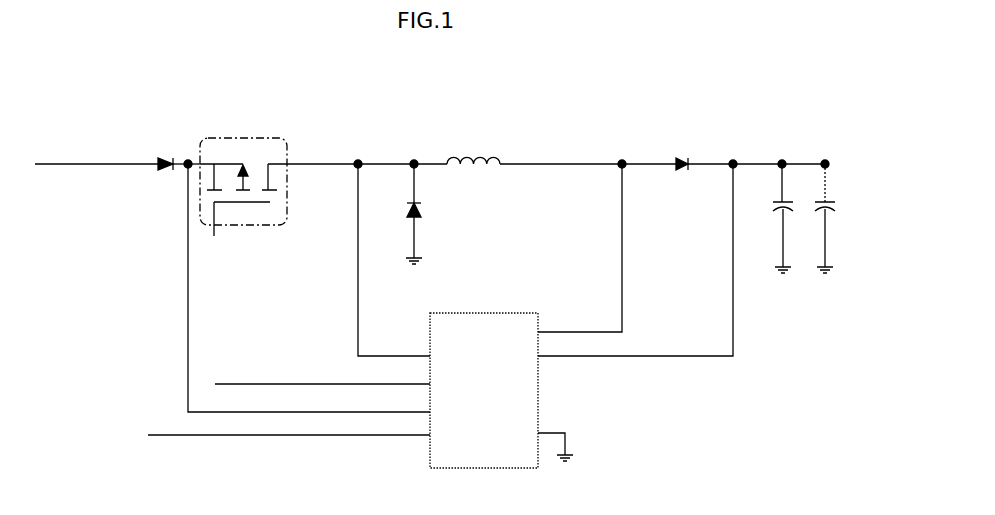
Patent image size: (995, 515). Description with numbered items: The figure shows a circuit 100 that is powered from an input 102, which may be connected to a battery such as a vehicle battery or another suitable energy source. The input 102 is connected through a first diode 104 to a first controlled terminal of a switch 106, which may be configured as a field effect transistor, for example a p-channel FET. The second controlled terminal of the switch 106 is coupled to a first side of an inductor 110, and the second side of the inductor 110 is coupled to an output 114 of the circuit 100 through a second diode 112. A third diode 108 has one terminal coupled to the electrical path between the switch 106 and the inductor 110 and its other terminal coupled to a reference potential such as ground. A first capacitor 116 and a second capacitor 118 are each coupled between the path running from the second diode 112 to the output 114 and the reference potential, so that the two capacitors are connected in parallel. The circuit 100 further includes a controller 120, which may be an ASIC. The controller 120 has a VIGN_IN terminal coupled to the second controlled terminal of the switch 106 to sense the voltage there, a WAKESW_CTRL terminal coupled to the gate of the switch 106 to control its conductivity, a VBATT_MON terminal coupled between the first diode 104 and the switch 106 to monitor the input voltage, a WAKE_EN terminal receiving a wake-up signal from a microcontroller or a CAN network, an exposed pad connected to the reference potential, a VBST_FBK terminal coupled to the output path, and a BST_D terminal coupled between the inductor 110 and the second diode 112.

The circuit 100 is at (708, 88).
The input 102 is at (126, 160).
The first diode 104 is at (167, 173).
The switch 106 is at (250, 137).
The third diode 108 is at (406, 206).
The inductor 110 is at (478, 153).
The second diode 112 is at (680, 157).
The output 114 is at (828, 160).
The first capacitor 116 is at (787, 212).
The second capacitor 118 is at (832, 214).
The controller 120 is at (501, 312).